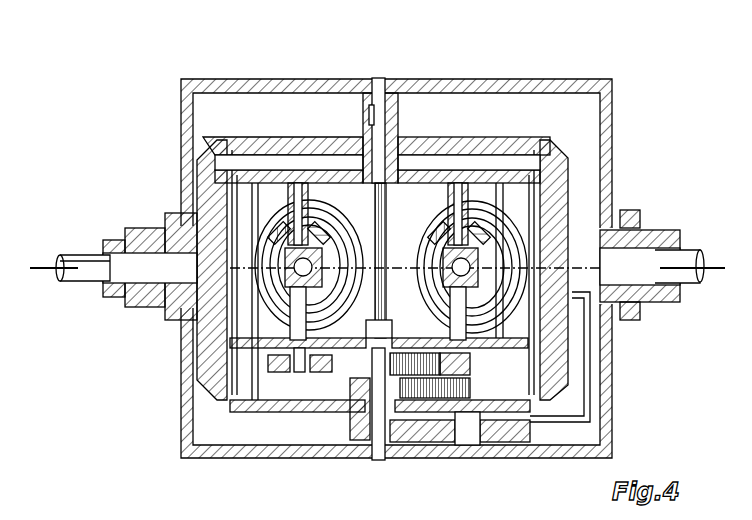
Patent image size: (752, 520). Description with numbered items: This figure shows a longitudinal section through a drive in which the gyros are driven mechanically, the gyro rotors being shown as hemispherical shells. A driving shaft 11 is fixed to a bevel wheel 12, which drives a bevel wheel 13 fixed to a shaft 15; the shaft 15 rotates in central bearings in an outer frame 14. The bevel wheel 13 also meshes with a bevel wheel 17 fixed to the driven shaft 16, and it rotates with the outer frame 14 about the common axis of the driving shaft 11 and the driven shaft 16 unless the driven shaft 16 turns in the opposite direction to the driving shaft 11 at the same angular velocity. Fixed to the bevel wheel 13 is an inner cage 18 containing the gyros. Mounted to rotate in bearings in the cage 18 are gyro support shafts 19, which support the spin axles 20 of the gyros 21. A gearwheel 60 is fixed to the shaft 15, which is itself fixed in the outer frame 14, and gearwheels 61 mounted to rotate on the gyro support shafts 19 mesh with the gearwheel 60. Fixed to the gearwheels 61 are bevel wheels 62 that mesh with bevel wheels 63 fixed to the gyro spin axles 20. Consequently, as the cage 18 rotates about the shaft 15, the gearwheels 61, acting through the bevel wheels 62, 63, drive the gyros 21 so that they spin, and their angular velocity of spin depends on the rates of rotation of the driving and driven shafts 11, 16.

The driving shaft 11 is at (112, 266).
The bevel wheel 12 is at (212, 163).
The bevel wheel 13 is at (240, 142).
The outer frame 14 is at (408, 85).
The shaft 15 is at (386, 126).
The driven shaft 16 is at (662, 265).
The bevel wheel 17 is at (553, 165).
The inner cage 18 is at (420, 172).
The gyro support shaft 19 is at (452, 312).
The spin axle 20 is at (440, 268).
The gyro 21 is at (432, 288).
The gearwheel 60 is at (340, 197).
The gearwheel 61 is at (446, 205).
The bevel wheel 62 is at (436, 230).
The bevel wheel 63 is at (472, 267).